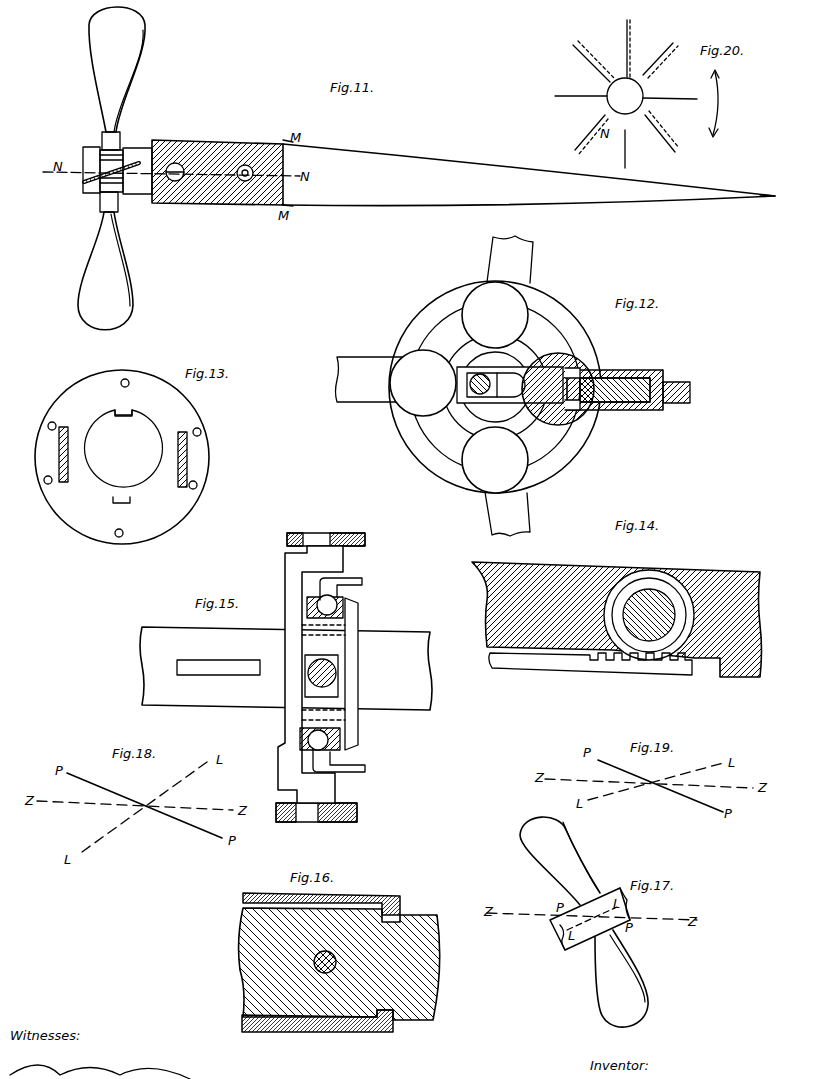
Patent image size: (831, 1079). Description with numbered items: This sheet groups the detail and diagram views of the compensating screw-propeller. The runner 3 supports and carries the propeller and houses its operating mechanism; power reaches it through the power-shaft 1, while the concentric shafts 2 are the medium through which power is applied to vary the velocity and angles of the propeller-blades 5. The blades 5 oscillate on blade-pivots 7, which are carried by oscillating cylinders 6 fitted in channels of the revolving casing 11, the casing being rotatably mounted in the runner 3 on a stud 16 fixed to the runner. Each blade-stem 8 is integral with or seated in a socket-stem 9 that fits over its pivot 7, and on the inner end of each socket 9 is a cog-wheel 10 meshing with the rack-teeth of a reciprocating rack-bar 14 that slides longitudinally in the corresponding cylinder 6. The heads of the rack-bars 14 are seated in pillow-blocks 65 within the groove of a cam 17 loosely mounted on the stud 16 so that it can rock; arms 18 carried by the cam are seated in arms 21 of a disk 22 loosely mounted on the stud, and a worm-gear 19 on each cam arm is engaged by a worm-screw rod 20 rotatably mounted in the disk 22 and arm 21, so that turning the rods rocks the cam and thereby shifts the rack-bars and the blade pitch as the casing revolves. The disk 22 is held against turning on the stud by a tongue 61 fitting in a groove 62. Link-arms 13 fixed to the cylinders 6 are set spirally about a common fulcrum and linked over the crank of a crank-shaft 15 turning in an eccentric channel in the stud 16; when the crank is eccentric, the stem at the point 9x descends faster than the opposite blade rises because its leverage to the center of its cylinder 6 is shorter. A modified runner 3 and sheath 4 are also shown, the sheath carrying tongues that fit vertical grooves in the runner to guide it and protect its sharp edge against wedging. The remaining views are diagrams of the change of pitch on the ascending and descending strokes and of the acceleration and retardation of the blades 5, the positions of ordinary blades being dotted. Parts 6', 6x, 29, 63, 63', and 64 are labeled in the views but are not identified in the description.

In FIG. 11, the power-shaft 1 is at (188, 150).
In FIG. 11, the concentric shafts 2 is at (250, 168).
In FIG. 16, the concentric shafts 2 is at (320, 970).
In FIG. 11, the runner 3 is at (529, 175).
In FIG. 16, the runner 3 is at (339, 964).
In FIG. 16, the sheath 4 is at (321, 956).
In FIG. 11, the propeller-blade 5 is at (72, 197).
In FIG. 20, the propeller-blade 5 is at (625, 87).
In FIG. 17, the propeller-blade 5 is at (584, 922).
In FIG. 11, the oscillating cylinder 6 is at (122, 188).
In FIG. 12, the oscillating cylinder 6 is at (459, 387).
In FIG. 14, the oscillating cylinder 6 is at (611, 619).
In FIG. 11, the end plate 6' is at (86, 155).
In FIG. 12, the roller 6x is at (432, 335).
In FIG. 12, the blade-pivot 7 is at (640, 410).
In FIG. 14, the blade-pivot 7 is at (630, 640).
In FIG. 12, the blade-stem 8 is at (690, 383).
In FIG. 11, the socket-stem 9 is at (114, 136).
In FIG. 12, the socket-stem 9 is at (665, 360).
In FIG. 14, the socket-stem 9 is at (650, 660).
In FIG. 12, the descending blade-stem point 9x is at (320, 376).
In FIG. 12, the cog-wheel 10 is at (585, 410).
In FIG. 14, the cog-wheel 10 is at (630, 578).
In FIG. 20, the revolving casing 11 is at (625, 96).
In FIG. 15, the revolving casing 11 is at (340, 680).
In FIG. 16, the revolving casing 11 is at (400, 905).
In FIG. 12, the link-arm 13 is at (490, 400).
In FIG. 15, the link-arm 13 is at (288, 765).
In FIG. 12, the reciprocating rack-bar 14 is at (575, 372).
In FIG. 14, the reciprocating rack-bar 14 is at (590, 664).
In FIG. 15, the reciprocating rack-bar 14 is at (321, 673).
In FIG. 12, the crank-shaft 15 is at (474, 389).
In FIG. 15, the stud 16 is at (286, 668).
In FIG. 15, the grooved cam 17 is at (276, 735).
In FIG. 15, the cam arm 18 is at (312, 674).
In FIG. 15, the worm-gear 19 is at (371, 815).
In FIG. 13, the worm-screw rod 20 is at (49, 425).
In FIG. 13, the disk arm 21 is at (58, 452).
In FIG. 13, the disk 22 is at (122, 457).
In FIG. 13, the holes 29 is at (122, 380).
In FIG. 15, the tongue 61 is at (214, 676).
In FIG. 13, the groove 62 is at (115, 410).
In FIG. 11, the ring 63 is at (149, 173).
In FIG. 12, the ring 63 is at (495, 387).
In FIG. 15, the outer race 63' is at (355, 674).
In FIG. 11, the blade tip 64 is at (774, 187).
In FIG. 15, the pillow-block 65 is at (363, 581).